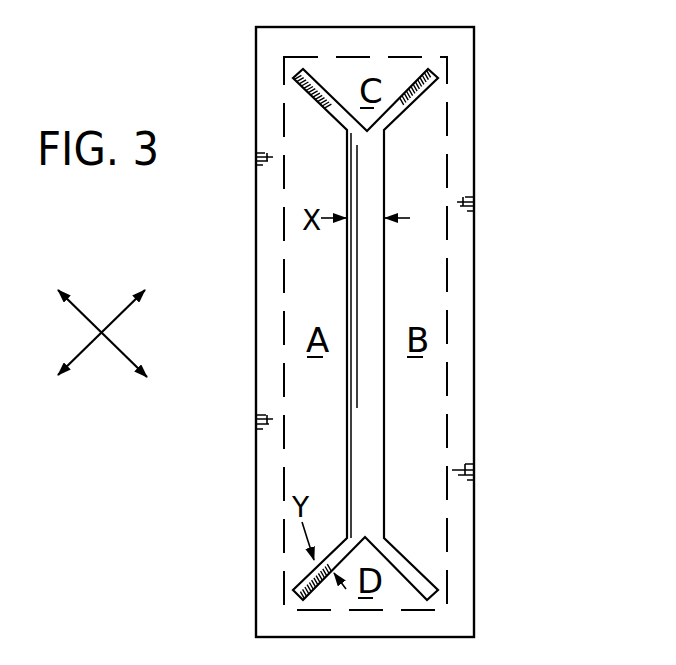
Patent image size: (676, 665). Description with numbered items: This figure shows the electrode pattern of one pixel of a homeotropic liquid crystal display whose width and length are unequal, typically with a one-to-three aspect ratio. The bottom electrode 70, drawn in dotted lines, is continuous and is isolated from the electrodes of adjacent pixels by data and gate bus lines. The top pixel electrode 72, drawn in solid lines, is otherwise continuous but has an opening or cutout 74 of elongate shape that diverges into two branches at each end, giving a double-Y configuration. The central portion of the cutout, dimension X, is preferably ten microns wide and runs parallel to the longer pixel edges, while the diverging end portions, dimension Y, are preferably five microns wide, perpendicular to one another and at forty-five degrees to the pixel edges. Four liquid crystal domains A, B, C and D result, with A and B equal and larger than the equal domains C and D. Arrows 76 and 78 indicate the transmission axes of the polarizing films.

The bottom electrode 70 is at (447, 167).
The top pixel electrode 72 is at (474, 268).
The opening or cutout 74 is at (363, 415).
The arrow 76 is at (87, 347).
The arrow 78 is at (124, 347).